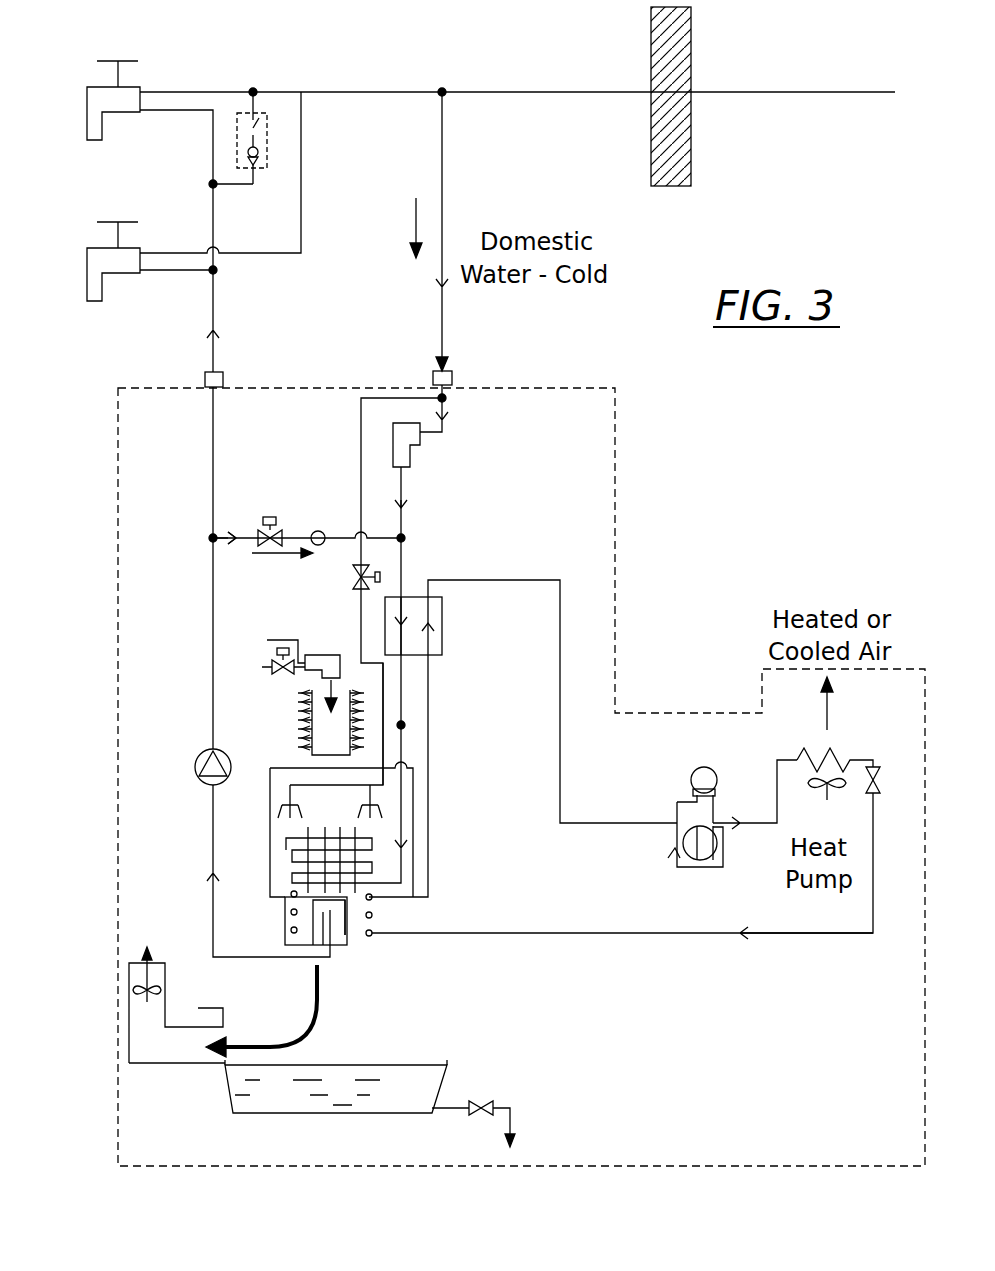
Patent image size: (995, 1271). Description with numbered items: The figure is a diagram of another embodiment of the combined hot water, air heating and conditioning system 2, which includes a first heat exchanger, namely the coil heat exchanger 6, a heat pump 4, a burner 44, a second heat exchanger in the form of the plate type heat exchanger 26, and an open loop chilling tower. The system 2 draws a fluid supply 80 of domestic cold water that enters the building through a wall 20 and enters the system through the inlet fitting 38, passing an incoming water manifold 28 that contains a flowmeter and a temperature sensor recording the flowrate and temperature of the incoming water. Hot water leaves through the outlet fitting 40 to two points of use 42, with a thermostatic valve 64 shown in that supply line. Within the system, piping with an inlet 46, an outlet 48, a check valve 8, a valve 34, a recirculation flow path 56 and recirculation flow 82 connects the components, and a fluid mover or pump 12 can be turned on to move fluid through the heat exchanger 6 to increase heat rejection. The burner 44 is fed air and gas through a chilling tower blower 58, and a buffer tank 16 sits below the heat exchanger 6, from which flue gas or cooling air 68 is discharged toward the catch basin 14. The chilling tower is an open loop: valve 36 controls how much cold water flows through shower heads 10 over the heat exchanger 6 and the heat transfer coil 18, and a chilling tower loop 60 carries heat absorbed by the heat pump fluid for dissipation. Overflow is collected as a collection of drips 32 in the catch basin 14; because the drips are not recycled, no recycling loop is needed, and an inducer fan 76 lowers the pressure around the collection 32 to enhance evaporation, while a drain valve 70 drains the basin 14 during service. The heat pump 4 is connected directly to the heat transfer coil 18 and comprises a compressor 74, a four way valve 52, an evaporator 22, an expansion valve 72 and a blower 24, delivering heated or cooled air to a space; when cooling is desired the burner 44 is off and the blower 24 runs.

The combined hot water, air heating and conditioning system 2 is at (118, 470).
The heat pump 4 is at (805, 935).
The coil heat exchanger (HEX) 6 is at (372, 850).
The check valve 8 is at (318, 531).
The shower head 10 is at (290, 800).
The fluid mover or pump 12 is at (196, 764).
The catch basin 14 is at (222, 1085).
The buffer tank 16 is at (345, 935).
The heat transfer coil 18 is at (285, 895).
The wall 20 is at (651, 115).
The evaporator 22 is at (850, 757).
The blower 24 is at (829, 790).
The plate type heat exchanger (PTHE) 26 is at (445, 630).
The incoming water manifold 28 is at (420, 440).
The collection of drips 32 is at (355, 1065).
The valve 34 is at (270, 517).
The valve 36 is at (353, 577).
The inlet fitting 38 is at (452, 380).
The outlet fitting 40 is at (205, 380).
The point of use 42 is at (103, 124).
The burner 44 is at (295, 694).
The inlet 46 is at (403, 725).
The outlet 48 is at (213, 538).
The four way valve 52 is at (700, 868).
The recirculation flow path 56 is at (255, 535).
The chilling tower blower 58 is at (318, 655).
The chilling tower loop 60 is at (383, 690).
The thermostatic valve 64 is at (243, 113).
The flue gas or cooling air 68 is at (320, 975).
The drain valve 70 is at (486, 1104).
The expansion valve 72 is at (876, 785).
The compressor 74 is at (716, 776).
The inducer fan 76 is at (166, 982).
The fluid supply 80 is at (416, 222).
The recirculation flow 82 is at (275, 557).